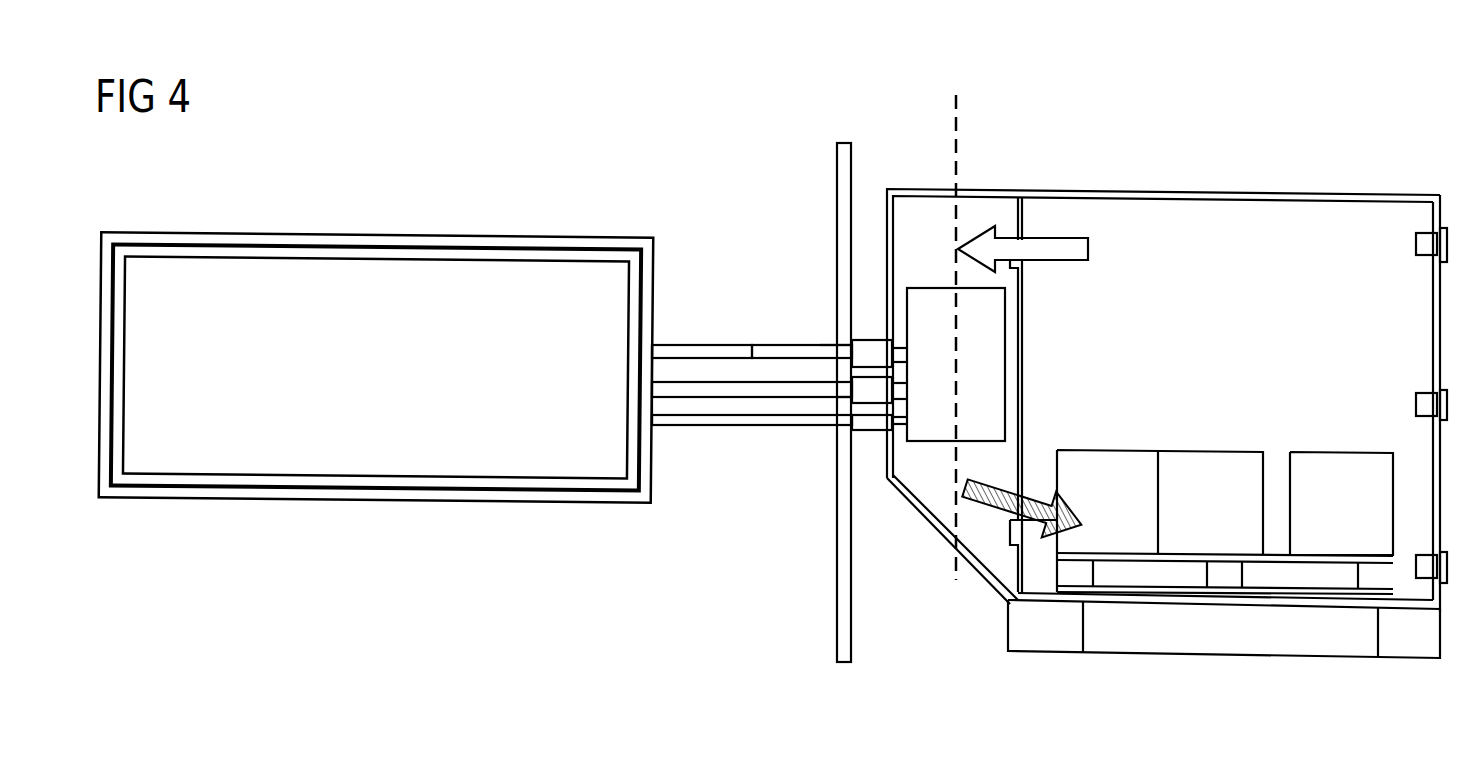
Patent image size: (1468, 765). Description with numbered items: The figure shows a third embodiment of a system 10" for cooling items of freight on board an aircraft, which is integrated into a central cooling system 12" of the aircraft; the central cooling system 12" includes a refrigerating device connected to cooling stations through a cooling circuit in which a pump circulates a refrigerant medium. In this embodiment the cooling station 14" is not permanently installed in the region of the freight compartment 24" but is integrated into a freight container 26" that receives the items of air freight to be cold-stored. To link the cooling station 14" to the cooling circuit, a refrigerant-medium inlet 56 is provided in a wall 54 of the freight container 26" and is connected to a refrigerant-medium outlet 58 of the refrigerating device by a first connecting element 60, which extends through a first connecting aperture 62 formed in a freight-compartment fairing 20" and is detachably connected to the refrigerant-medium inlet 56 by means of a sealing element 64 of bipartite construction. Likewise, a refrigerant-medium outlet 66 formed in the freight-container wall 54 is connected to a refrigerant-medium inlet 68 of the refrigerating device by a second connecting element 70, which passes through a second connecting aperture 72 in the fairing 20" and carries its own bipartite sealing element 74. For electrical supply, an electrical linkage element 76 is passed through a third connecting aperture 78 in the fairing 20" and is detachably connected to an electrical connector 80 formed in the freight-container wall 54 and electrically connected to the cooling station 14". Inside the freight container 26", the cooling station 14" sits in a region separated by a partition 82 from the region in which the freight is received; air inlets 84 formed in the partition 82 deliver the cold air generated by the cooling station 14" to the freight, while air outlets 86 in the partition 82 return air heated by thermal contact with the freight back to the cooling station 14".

The system for cooling items of freight 10 is at (648, 168).
The central cooling system 12 is at (327, 180).
The cooling station 14 is at (992, 328).
The freight-compartment fairing 20 is at (838, 645).
The freight compartment 24 is at (1266, 150).
The freight container 26 is at (1394, 196).
The freight-container wall 54 is at (893, 207).
The refrigerant-medium inlet 56 is at (871, 425).
The refrigerant-medium outlet 58 is at (657, 402).
The first connecting element 60 is at (716, 384).
The first connecting aperture 62 is at (829, 412).
The sealing element 64 is at (861, 432).
The refrigerant-medium outlet 66 is at (881, 338).
The refrigerant-medium inlet 68 is at (655, 343).
The second connecting element 70 is at (764, 350).
The second connecting aperture 72 is at (835, 345).
The sealing element 74 is at (866, 324).
The electrical linkage element 76 is at (715, 427).
The third connecting aperture 78 is at (836, 403).
The electrical connector 80 is at (884, 440).
The partition 82 is at (1024, 398).
The air inlets 84 is at (1020, 495).
The air outlets 86 is at (1022, 235).